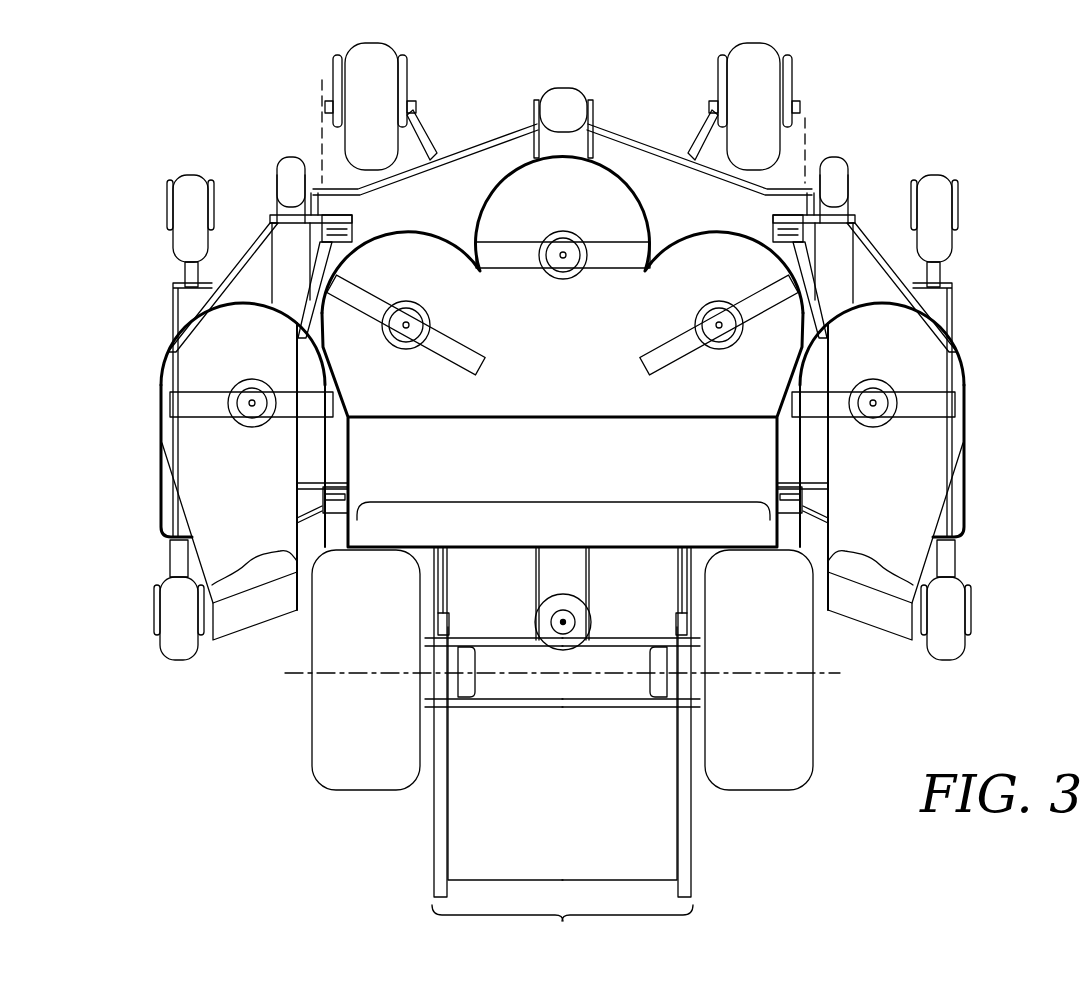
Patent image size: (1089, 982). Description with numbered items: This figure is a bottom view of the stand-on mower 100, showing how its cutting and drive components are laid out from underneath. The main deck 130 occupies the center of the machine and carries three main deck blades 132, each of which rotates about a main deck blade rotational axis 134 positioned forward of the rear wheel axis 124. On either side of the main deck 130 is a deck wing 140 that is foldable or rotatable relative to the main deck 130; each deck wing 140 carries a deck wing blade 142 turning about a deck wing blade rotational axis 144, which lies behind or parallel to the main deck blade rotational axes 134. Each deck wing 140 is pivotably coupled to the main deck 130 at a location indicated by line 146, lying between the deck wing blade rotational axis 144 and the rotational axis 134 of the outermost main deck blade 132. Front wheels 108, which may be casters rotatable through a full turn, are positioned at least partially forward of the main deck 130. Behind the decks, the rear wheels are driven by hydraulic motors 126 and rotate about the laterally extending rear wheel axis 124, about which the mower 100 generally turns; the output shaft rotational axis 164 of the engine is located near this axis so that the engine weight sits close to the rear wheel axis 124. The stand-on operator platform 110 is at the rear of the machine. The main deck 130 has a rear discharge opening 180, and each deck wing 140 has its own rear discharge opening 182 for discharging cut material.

The mower 100 is at (992, 168).
The front wheel 108 is at (388, 74).
The operator platform 110 is at (563, 915).
The rear wheel axis 124 is at (832, 673).
The hydraulic motor 126 is at (458, 704).
The main deck 130 is at (503, 146).
The main deck blade 132 is at (519, 242).
The main deck blade rotational axis 134 is at (563, 268).
The deck wing 140 is at (178, 368).
The deck wing blade 142 is at (176, 402).
The deck wing blade rotational axis 144 is at (254, 412).
The line 146 is at (320, 127).
The output shaft rotational axis 164 is at (562, 622).
The rear discharge opening 180 is at (555, 503).
The rear discharge opening 182 is at (249, 563).